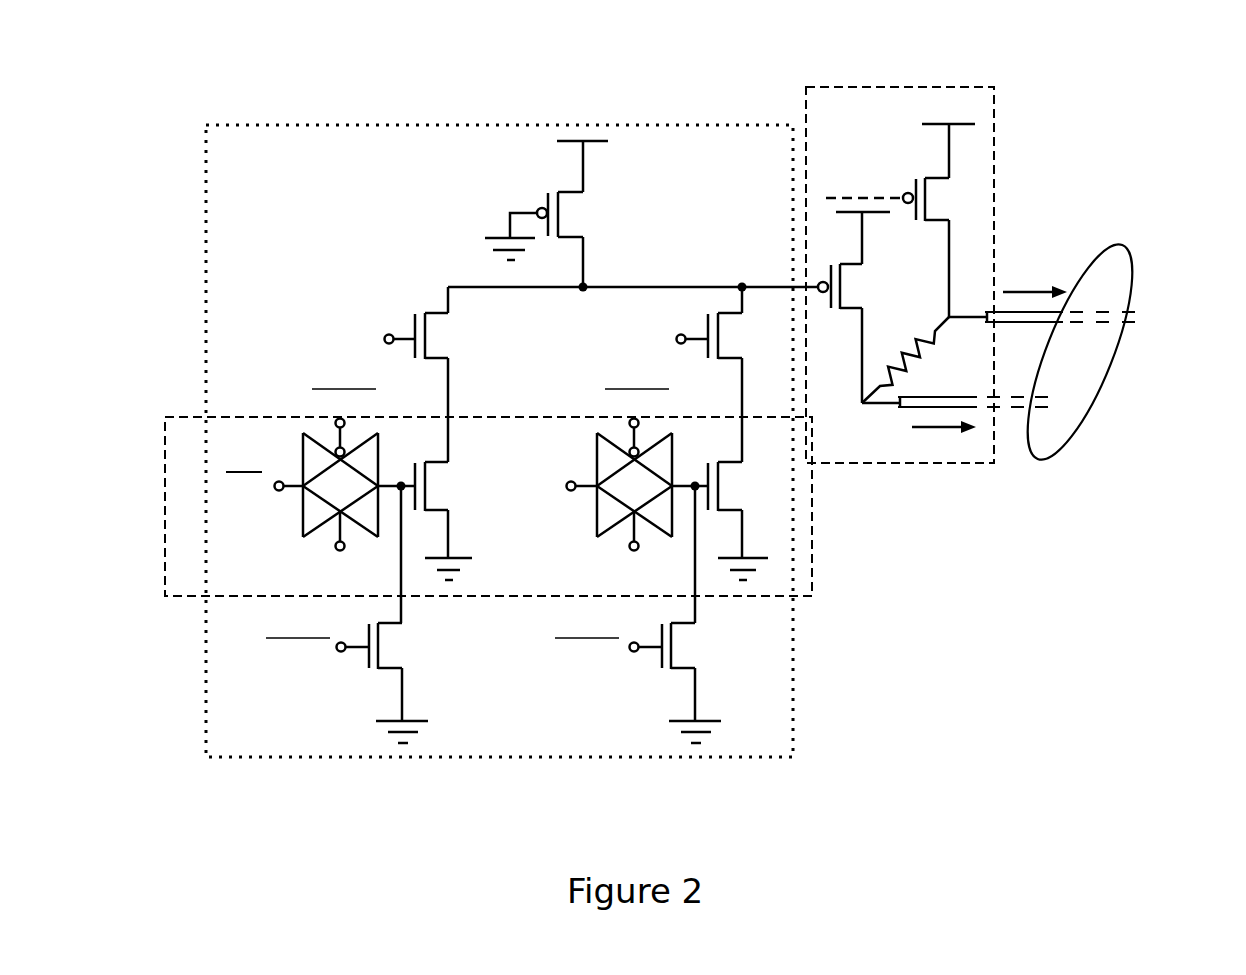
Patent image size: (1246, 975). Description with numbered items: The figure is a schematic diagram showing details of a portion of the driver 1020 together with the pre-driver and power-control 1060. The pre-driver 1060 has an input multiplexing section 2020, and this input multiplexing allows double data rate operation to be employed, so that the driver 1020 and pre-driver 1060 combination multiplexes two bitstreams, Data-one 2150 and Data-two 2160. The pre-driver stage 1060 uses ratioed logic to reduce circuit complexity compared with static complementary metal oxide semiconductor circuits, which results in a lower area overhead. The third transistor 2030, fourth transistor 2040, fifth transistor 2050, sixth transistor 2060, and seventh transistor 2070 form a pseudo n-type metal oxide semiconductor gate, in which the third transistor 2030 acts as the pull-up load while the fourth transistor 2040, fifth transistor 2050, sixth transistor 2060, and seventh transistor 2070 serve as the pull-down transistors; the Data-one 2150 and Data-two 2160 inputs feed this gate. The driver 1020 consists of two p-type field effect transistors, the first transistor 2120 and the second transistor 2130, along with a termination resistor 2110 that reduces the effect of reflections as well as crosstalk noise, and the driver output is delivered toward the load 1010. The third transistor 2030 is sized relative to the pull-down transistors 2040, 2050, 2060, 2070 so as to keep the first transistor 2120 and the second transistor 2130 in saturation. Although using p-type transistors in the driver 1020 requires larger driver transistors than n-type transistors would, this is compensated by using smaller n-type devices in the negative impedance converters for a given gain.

The load / transmission line termination 1010 is at (1128, 222).
The driver 1020 is at (964, 65).
The pre-driver and power-control 1060 is at (533, 783).
The input multiplexing 2020 is at (226, 402).
The transistor M3 2030 is at (635, 202).
The transistor M4 2040 is at (490, 352).
The transistor M5 2050 is at (493, 502).
The transistor M6 2060 is at (783, 350).
The transistor M7 2070 is at (783, 500).
The termination resistor RT 2110 is at (960, 367).
The transistor M1 2120 is at (903, 277).
The transistor M2 2130 is at (1005, 179).
The Data1 2150 is at (345, 318).
The Data2 2160 is at (596, 338).